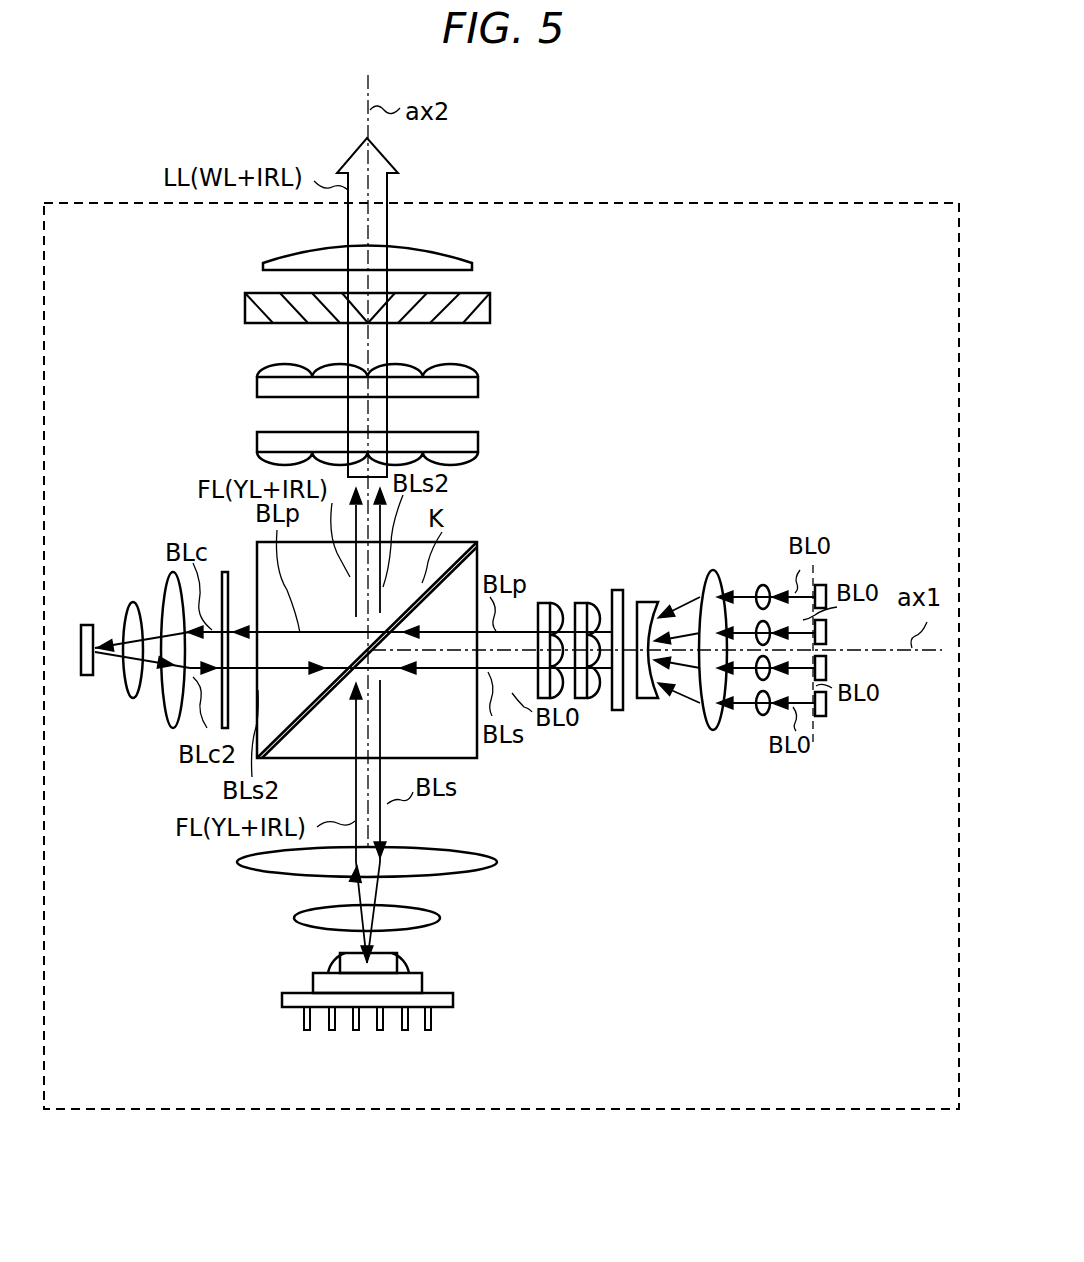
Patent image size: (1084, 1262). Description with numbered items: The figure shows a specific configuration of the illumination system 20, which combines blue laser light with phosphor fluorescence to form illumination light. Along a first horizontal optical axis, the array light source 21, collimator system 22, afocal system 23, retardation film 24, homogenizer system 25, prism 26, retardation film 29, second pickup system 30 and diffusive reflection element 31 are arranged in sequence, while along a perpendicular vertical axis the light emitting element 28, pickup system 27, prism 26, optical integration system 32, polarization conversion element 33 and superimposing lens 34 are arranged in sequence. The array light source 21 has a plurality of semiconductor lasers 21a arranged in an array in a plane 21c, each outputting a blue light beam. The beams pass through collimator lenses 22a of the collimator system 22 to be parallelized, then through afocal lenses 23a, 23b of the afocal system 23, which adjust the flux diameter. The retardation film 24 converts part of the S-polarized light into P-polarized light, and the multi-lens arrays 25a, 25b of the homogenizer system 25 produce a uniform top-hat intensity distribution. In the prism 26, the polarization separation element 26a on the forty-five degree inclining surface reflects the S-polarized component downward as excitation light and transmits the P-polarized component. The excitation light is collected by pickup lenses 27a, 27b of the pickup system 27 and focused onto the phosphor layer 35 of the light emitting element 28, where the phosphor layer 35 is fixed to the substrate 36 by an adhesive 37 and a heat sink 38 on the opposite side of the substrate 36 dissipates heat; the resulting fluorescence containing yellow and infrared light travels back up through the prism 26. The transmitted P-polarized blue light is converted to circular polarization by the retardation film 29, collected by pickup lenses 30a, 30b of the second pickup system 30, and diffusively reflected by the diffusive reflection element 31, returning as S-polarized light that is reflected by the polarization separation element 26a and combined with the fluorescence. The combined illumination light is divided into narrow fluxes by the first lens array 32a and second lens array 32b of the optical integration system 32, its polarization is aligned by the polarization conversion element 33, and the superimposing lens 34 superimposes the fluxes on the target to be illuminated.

The illumination system 20 is at (782, 203).
The array light source 21 is at (854, 650).
The semiconductor laser 21a is at (828, 588).
The plane 21c is at (813, 743).
The collimator system 22 is at (761, 637).
The collimator lens 22a is at (763, 585).
The afocal system 23 is at (692, 601).
The afocal lens 23a is at (713, 572).
The afocal lens 23b is at (645, 598).
The retardation film 24 is at (619, 712).
The homogenizer system 25 is at (543, 597).
The multi-lens array 25a is at (585, 597).
The multi-lens array 25b is at (547, 597).
The prism 26 is at (385, 652).
The polarization separation element 26a is at (460, 540).
The pickup system 27 is at (431, 880).
The pickup lens 27a is at (480, 860).
The pickup lens 27b is at (440, 918).
The light emitting element 28 is at (385, 982).
The retardation film 29 is at (225, 570).
The second pickup system 30 is at (126, 692).
The pickup lens 30a is at (168, 698).
The pickup lens 30b is at (127, 687).
The diffusive reflection element 31 is at (88, 626).
The optical integration system 32 is at (301, 414).
The first lens array 32a is at (331, 445).
The second lens array 32b is at (257, 389).
The polarization conversion element 33 is at (486, 299).
The superimposing lens 34 is at (468, 263).
The phosphor layer 35 is at (340, 953).
The substrate 36 is at (313, 983).
The adhesive 37 is at (407, 964).
The heat sink 38 is at (282, 1001).